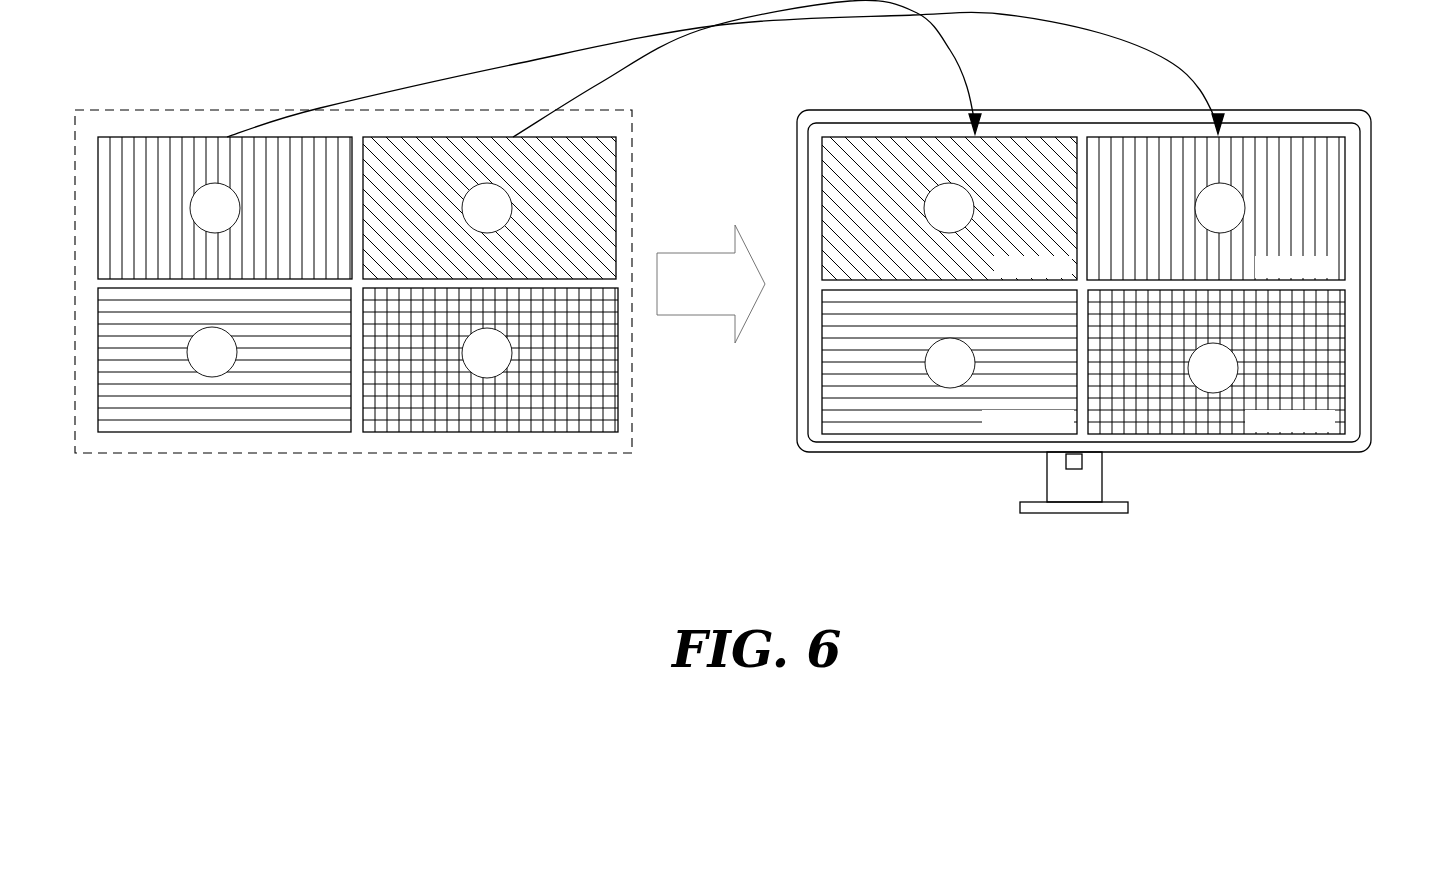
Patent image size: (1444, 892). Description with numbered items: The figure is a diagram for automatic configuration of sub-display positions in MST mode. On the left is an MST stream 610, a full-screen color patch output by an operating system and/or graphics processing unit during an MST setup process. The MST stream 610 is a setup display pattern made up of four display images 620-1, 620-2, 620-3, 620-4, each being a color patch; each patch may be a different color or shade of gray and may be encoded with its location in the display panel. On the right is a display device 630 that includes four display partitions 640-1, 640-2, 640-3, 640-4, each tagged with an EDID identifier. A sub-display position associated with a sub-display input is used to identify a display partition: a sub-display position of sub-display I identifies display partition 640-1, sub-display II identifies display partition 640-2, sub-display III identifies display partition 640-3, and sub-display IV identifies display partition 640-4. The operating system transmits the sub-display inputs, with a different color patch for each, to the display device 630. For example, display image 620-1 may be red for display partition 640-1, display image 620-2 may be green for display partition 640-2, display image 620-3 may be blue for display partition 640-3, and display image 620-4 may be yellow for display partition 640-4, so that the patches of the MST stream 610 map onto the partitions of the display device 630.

The MST stream 610 is at (497, 110).
The display image 620-1 is at (132, 137).
The display image 620-2 is at (617, 200).
The display image 620-3 is at (245, 432).
The display image 620-4 is at (618, 372).
The display device 630 is at (1250, 110).
The display partition 640-1 is at (822, 185).
The display partition 640-2 is at (1345, 200).
The display partition 640-3 is at (858, 436).
The display partition 640-4 is at (1250, 434).